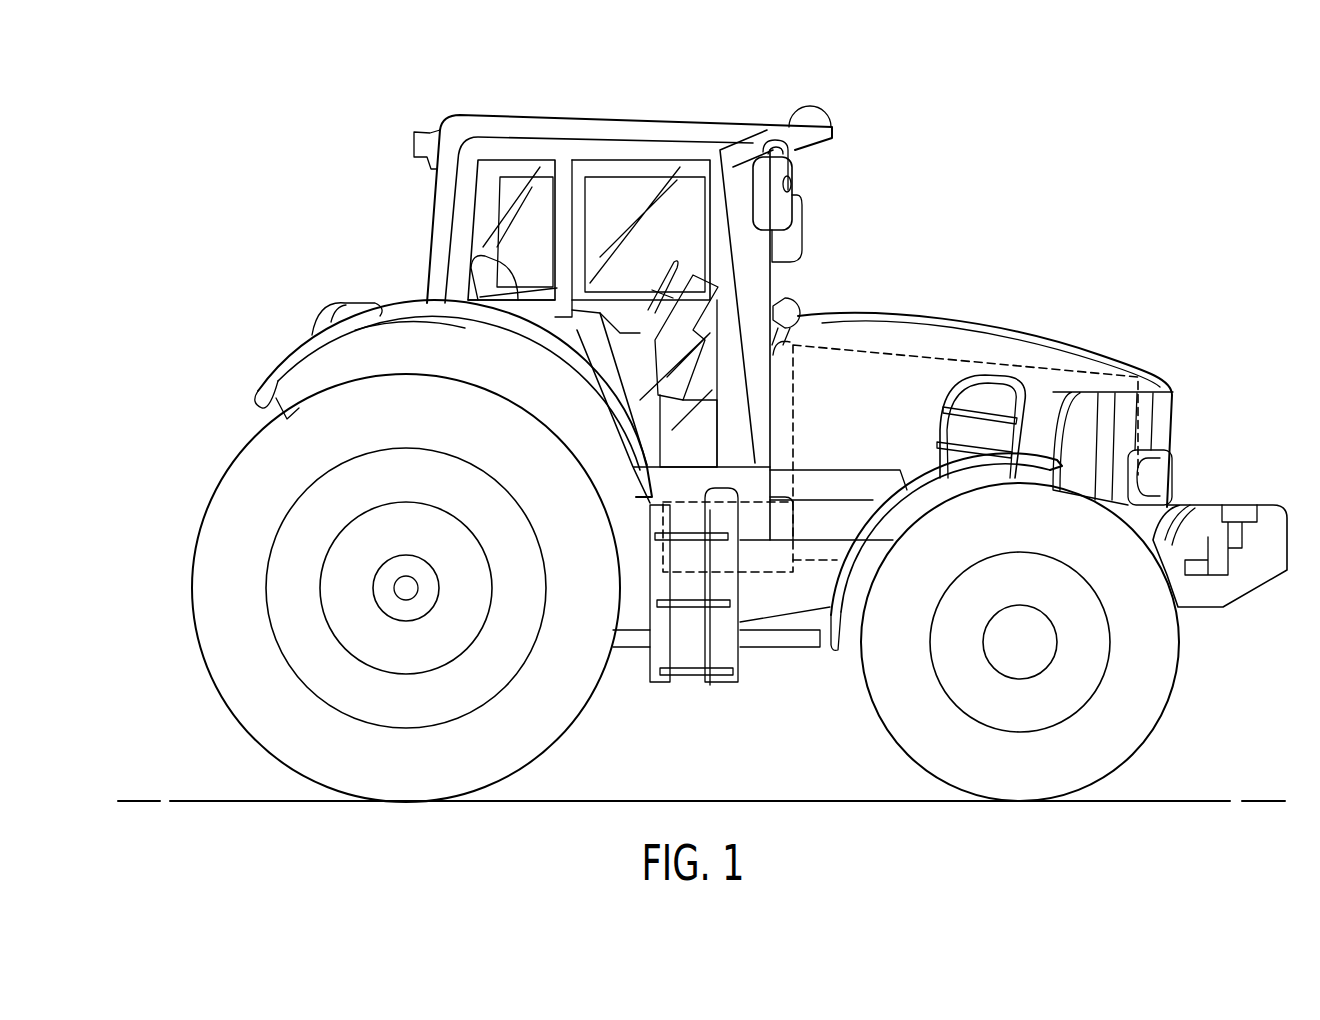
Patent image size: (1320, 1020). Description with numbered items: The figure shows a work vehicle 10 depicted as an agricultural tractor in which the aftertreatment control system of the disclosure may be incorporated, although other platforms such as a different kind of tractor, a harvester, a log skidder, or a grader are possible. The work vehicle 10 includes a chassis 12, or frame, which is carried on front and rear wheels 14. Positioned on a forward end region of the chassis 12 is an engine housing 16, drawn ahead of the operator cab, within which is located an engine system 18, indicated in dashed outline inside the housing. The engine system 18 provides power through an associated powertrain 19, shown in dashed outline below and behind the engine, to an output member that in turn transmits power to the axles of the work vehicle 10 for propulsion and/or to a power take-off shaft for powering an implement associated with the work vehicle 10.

The work vehicle 10 is at (357, 107).
The chassis 12 is at (632, 656).
The front and rear wheels 14 is at (404, 586).
The engine housing 16 is at (1070, 340).
The engine system 18 is at (967, 362).
The powertrain 19 is at (787, 583).